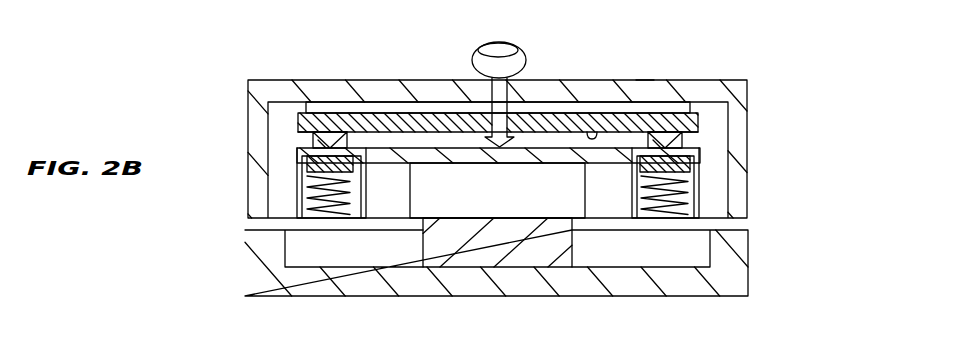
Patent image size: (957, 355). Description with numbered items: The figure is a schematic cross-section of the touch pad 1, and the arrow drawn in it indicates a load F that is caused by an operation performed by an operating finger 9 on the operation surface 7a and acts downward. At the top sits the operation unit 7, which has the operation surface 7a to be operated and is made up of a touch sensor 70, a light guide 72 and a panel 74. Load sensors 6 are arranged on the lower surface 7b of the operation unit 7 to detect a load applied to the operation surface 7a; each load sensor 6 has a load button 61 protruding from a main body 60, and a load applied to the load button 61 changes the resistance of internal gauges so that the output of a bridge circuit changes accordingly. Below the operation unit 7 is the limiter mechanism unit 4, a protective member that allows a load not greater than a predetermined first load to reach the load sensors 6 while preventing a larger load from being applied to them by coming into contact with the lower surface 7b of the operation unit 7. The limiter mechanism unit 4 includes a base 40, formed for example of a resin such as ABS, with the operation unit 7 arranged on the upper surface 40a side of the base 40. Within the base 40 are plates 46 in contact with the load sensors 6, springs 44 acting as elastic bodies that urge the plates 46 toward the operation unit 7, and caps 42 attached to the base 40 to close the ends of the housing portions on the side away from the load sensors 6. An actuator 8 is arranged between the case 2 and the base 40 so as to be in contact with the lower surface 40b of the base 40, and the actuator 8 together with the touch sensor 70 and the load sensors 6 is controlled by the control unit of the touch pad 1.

The touch pad 1 is at (853, 46).
The case 2 is at (733, 271).
The limiter mechanism unit 4 is at (197, 135).
The load sensor 6 is at (197, 65).
The operation unit 7 is at (804, 45).
The operation surface 7a is at (645, 80).
The lower surface 7b is at (590, 137).
The actuator 8 is at (532, 255).
The operating finger 9 is at (478, 58).
The base 40 is at (300, 152).
The upper surface 40a is at (390, 160).
The lower surface 40b is at (592, 220).
The cap 42 is at (312, 190).
The spring 44 is at (310, 170).
The plate 46 is at (298, 164).
The main body 60 is at (300, 118).
The load button 61 is at (316, 140).
The touch sensor 70 is at (684, 125).
The light guide 72 is at (682, 107).
The panel 74 is at (742, 82).
The load F is at (488, 93).